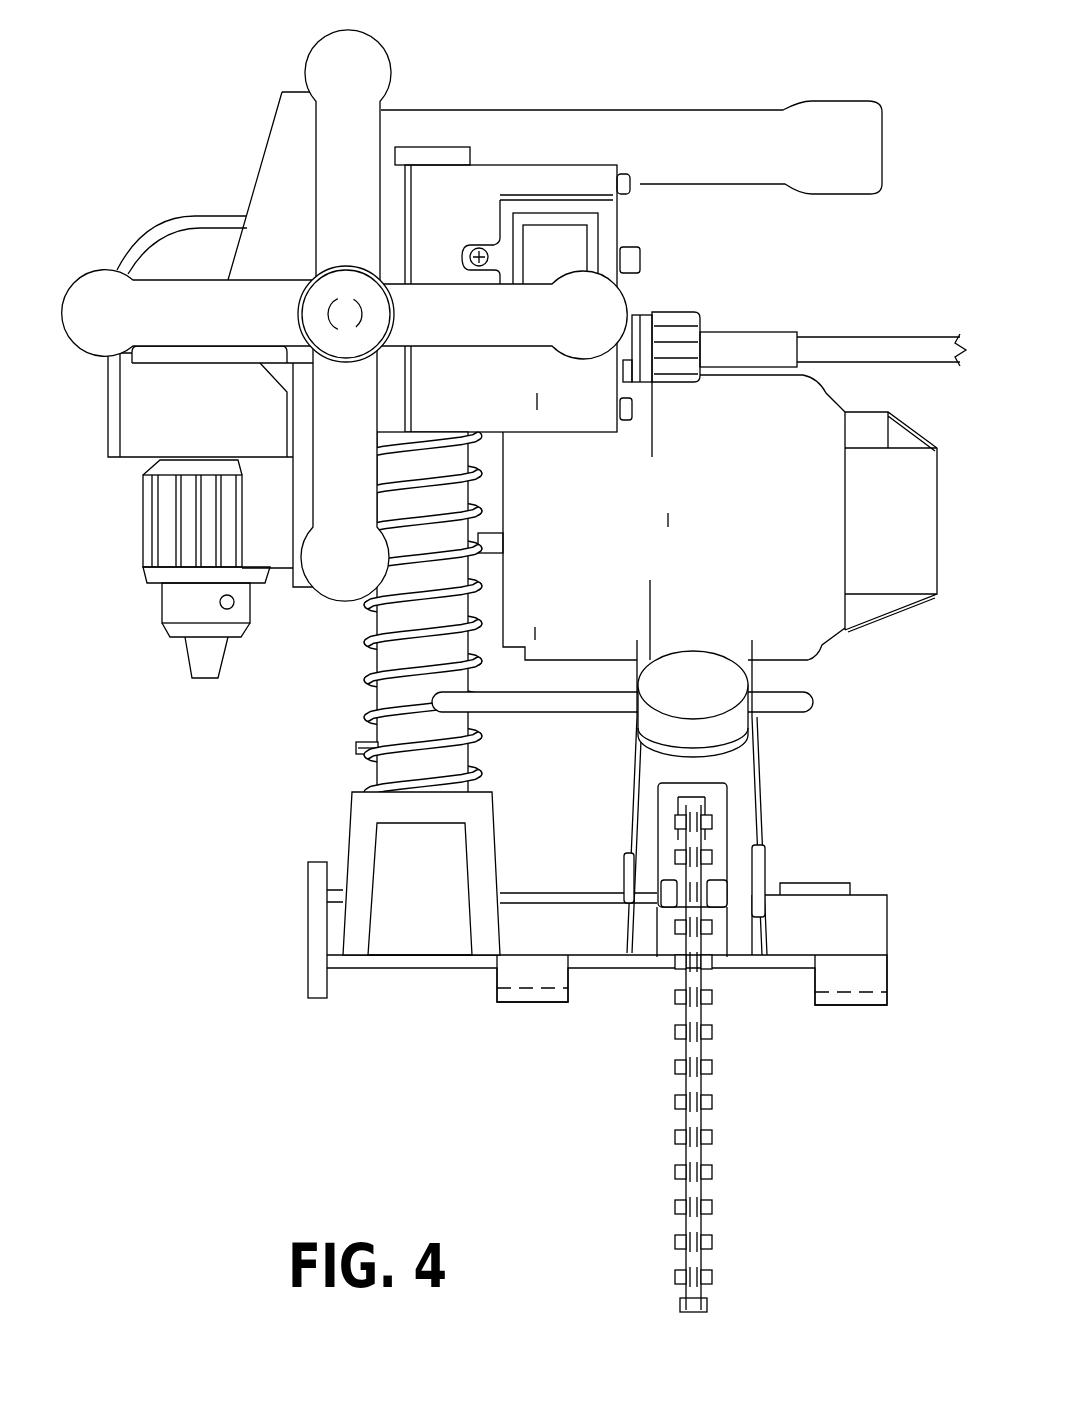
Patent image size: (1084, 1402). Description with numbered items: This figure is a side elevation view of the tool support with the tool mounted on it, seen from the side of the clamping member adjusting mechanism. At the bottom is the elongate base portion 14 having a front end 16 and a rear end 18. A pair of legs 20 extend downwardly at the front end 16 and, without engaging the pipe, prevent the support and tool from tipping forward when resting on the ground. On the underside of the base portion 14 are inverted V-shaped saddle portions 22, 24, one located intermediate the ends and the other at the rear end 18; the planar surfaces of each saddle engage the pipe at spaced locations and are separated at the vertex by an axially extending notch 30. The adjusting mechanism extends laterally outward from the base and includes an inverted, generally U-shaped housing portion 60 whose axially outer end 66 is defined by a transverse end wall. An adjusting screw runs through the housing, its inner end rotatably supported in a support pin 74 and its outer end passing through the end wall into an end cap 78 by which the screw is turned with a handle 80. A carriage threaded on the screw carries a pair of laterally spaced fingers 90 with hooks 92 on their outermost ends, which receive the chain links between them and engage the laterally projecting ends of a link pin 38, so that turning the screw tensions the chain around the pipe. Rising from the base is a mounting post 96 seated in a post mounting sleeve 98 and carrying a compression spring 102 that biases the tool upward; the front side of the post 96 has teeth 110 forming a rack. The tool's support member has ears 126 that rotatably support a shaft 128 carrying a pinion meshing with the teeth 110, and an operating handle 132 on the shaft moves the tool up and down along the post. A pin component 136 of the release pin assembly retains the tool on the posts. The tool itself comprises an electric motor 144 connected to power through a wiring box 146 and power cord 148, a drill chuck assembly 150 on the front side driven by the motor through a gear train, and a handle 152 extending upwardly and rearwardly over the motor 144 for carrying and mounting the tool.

The base portion 14 is at (527, 886).
The front end 16 is at (283, 924).
The rear end 18 is at (901, 958).
The legs 20 is at (345, 1001).
The saddle portion 22 is at (549, 1007).
The saddle portion 24 is at (869, 1010).
The notch 30 is at (521, 992).
The link pins 38 is at (660, 1205).
The housing portion 60 is at (644, 783).
The outer end 66 is at (704, 759).
The support pin 74 is at (768, 875).
The end cap 78 is at (707, 722).
The handle 80 is at (536, 700).
The fingers 90 is at (664, 830).
The hooks 92 is at (667, 887).
The post 96 is at (350, 676).
The post mounting sleeve 98 is at (348, 819).
The compression spring 102 is at (371, 701).
The teeth 110 is at (400, 624).
The ears 126 is at (366, 340).
The shaft 128 is at (372, 315).
The operating handle 132 is at (345, 303).
The pin component 136 is at (637, 1058).
The electric motor 144 is at (827, 651).
The wiring box 146 is at (642, 255).
The power cord 148 is at (914, 330).
The drill chuck assembly 150 is at (160, 685).
The handle 152 is at (705, 103).